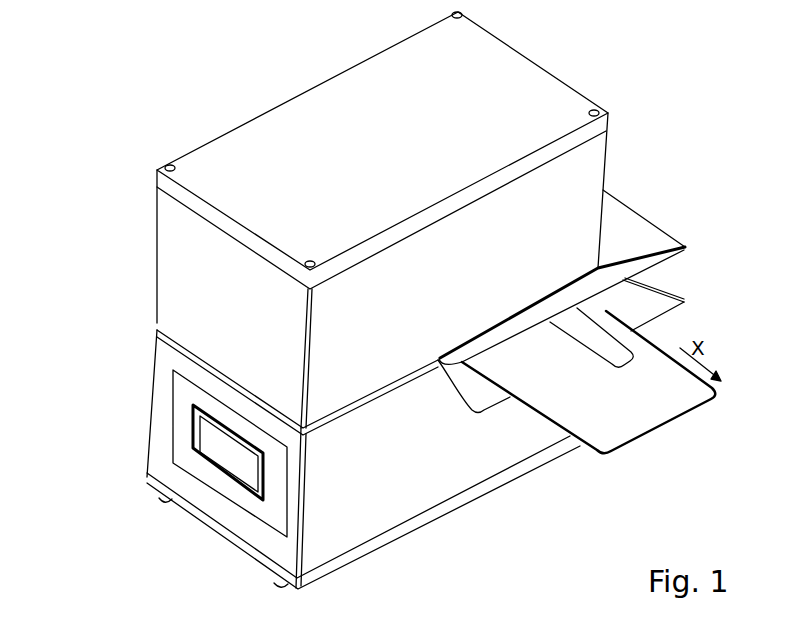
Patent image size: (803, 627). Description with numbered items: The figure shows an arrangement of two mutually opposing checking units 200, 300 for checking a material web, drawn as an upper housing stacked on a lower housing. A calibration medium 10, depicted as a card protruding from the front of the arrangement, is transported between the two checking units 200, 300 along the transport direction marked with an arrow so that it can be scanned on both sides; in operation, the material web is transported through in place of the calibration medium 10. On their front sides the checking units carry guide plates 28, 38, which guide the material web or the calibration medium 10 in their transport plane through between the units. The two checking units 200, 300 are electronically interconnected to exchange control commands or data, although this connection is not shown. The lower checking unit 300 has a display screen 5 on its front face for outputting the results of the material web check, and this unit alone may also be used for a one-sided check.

The checking unit 200 is at (118, 256).
The checking unit 300 is at (118, 402).
The display screen 5 is at (196, 438).
The guide plate 28 is at (656, 228).
The calibration medium 10 is at (647, 440).
The guide plate 38 is at (470, 412).